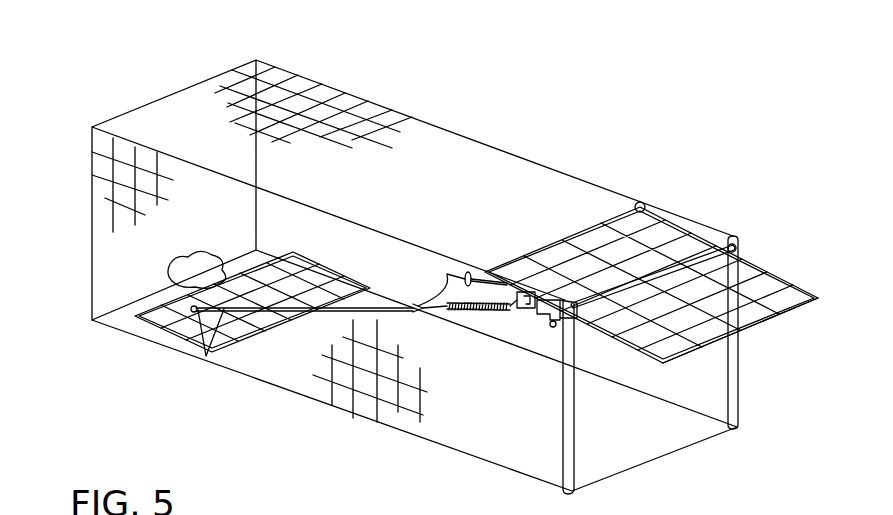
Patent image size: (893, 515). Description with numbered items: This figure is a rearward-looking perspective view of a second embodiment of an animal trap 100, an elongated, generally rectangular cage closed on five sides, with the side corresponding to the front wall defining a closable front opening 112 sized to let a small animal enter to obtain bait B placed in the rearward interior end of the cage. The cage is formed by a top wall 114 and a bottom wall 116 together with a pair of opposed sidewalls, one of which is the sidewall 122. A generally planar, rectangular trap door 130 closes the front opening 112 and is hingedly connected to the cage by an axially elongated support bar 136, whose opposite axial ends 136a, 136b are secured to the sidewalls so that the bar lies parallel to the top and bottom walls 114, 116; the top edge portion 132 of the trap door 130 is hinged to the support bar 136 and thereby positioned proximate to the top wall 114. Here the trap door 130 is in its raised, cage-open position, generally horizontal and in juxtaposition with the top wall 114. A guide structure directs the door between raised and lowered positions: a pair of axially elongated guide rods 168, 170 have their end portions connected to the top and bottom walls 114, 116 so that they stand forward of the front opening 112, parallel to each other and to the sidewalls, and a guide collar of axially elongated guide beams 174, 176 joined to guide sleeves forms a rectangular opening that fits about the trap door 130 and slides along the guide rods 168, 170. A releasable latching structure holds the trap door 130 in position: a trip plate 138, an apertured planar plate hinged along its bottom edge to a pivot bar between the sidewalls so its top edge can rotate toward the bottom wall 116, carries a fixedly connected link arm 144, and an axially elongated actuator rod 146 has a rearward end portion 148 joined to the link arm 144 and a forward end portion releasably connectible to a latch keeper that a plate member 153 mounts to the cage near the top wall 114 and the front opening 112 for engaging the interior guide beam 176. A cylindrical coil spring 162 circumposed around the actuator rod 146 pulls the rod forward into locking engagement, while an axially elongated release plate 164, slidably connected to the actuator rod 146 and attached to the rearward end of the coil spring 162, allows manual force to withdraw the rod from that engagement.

The animal trap 100 is at (365, 70).
The front opening 112 is at (611, 445).
The top wall 114 is at (283, 80).
The bottom wall 116 is at (657, 438).
The sidewall 122 is at (105, 182).
The trap door 130 is at (694, 221).
The top edge portion 132 is at (587, 223).
The axial end 136a is at (447, 272).
The axial end 136b is at (642, 201).
The support bar 136 is at (476, 270).
The trip plate 138 is at (135, 330).
The link arm 144 is at (193, 335).
The actuator rod 146 is at (298, 312).
The rearward end portion 148 is at (213, 362).
The plate member 153 is at (560, 283).
The coil spring 162 is at (475, 312).
The release plate 164 is at (437, 273).
The guide rod 168 is at (560, 452).
The guide rod 170 is at (740, 362).
The guide beam 174 is at (743, 267).
The interior guide beam 176 is at (650, 258).
The bait B is at (173, 268).